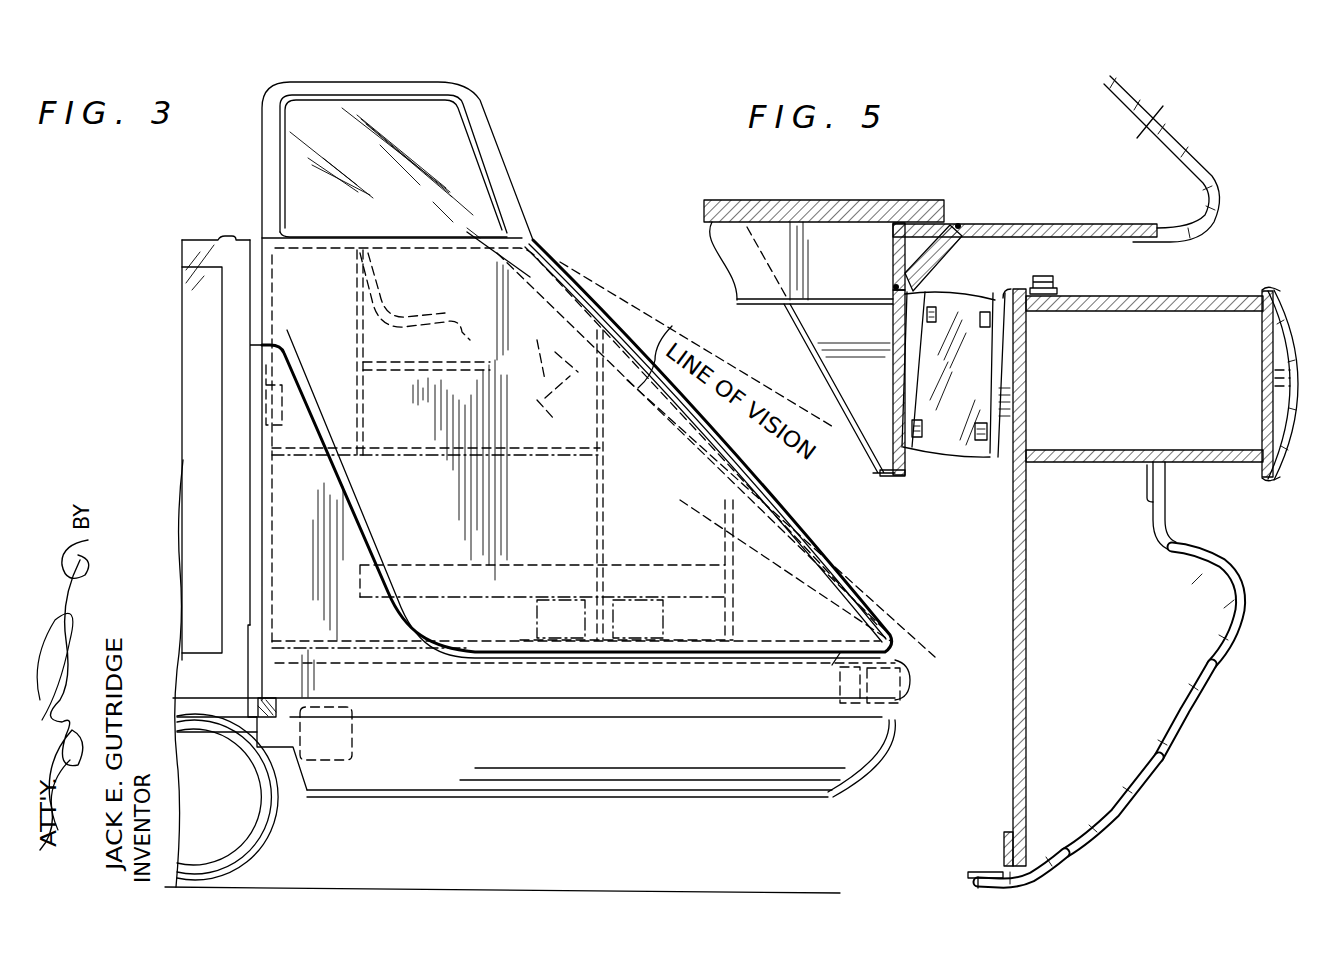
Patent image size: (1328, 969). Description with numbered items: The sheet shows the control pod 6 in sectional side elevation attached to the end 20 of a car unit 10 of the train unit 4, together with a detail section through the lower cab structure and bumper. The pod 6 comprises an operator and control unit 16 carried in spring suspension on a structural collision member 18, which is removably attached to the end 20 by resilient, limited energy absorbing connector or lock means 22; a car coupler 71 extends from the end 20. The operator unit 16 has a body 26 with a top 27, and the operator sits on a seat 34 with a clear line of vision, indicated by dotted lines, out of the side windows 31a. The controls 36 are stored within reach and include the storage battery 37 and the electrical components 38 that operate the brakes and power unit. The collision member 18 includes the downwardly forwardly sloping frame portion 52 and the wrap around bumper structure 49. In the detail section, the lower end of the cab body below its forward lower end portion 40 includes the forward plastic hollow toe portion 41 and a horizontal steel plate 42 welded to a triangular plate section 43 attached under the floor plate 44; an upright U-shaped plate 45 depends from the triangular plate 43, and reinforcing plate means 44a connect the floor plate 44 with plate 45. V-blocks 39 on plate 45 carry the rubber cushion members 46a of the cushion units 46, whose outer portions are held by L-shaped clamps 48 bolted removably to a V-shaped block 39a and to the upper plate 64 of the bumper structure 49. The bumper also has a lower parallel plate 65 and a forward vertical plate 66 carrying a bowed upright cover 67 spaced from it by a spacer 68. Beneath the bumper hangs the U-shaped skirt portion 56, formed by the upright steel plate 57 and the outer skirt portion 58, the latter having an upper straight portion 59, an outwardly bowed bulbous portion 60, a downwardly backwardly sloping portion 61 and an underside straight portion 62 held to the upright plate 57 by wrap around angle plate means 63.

In FIG. 3, the train unit 4 is at (168, 404).
In FIG. 3, the control pod 6 is at (259, 182).
In FIG. 5, the control pod 6 is at (1159, 116).
In FIG. 3, the car unit 10 is at (195, 241).
In FIG. 3, the operator and control unit 16 is at (500, 150).
In FIG. 3, the structural collision member 18 is at (916, 703).
In FIG. 5, the structural collision member 18 is at (1293, 466).
In FIG. 3, the end of car unit 20 is at (257, 238).
In FIG. 3, the connector or lock means 22 is at (270, 407).
In FIG. 3, the operator and control containing body 26 is at (513, 224).
In FIG. 3, the top 27 is at (444, 87).
In FIG. 3, the side windows 31a is at (427, 135).
In FIG. 3, the seat 34 is at (413, 338).
In FIG. 3, the controls 36 is at (545, 380).
In FIG. 3, the storage battery 37 is at (555, 600).
In FIG. 3, the electrical components or controls 38 is at (640, 600).
In FIG. 5, the V-blocks 39 is at (900, 361).
In FIG. 5, the V-shaped block 39a is at (993, 462).
In FIG. 5, the forward lower end portion 40 is at (1222, 213).
In FIG. 5, the forward plastic hollow toe portion 41 is at (1195, 163).
In FIG. 5, the horizontal steel plate 42 is at (1030, 224).
In FIG. 5, the triangular plate section 43 is at (893, 258).
In FIG. 5, the floor plate 44 is at (833, 204).
In FIG. 5, the reinforcing plate means 44a is at (812, 352).
In FIG. 5, the upright structural plate 45 is at (893, 300).
In FIG. 3, the cushion units 46 is at (493, 687).
In FIG. 5, the cushion units 46 is at (946, 447).
In FIG. 5, the rubber cushion member 46a is at (957, 301).
In FIG. 5, the L-shaped clamps 48 is at (1005, 372).
In FIG. 3, the bumper structure 49 is at (612, 705).
In FIG. 5, the bumper structure 49 is at (1220, 470).
In FIG. 3, the right frame portion 52 is at (348, 503).
In FIG. 3, the U-shaped skirt portion 56 is at (866, 777).
In FIG. 5, the U-shaped skirt portion 56 is at (1206, 710).
In FIG. 5, the U-shaped steel plate 57 is at (1012, 710).
In FIG. 5, the outer skirt portion 58 is at (1243, 629).
In FIG. 5, the upper straight portion 59 is at (1166, 499).
In FIG. 5, the outwardly bowed portion 60 is at (1242, 578).
In FIG. 5, the downwardly backwardly sloping portion 61 is at (1145, 770).
In FIG. 5, the underside straight portion 62 is at (1003, 885).
In FIG. 5, the angle plate means 63 is at (985, 873).
In FIG. 5, the upper plate structure 64 is at (1127, 298).
In FIG. 5, the lower plate structure 65 is at (1076, 452).
In FIG. 5, the forward vertical wrap around plate 66 is at (1263, 353).
In FIG. 3, the upright cover 67 is at (905, 672).
In FIG. 5, the upright cover 67 is at (1284, 290).
In FIG. 5, the spacer 68 is at (1268, 392).
In FIG. 3, the car coupler 71 is at (325, 752).